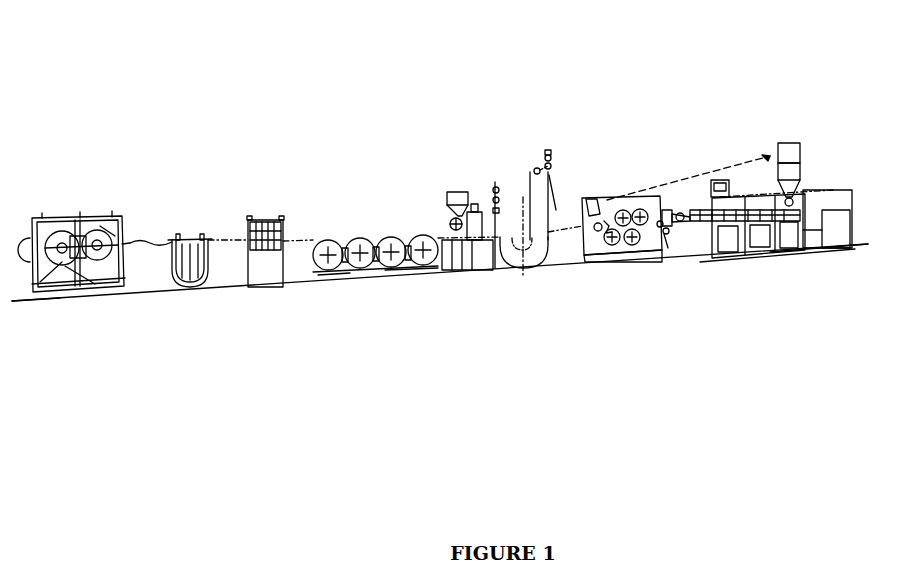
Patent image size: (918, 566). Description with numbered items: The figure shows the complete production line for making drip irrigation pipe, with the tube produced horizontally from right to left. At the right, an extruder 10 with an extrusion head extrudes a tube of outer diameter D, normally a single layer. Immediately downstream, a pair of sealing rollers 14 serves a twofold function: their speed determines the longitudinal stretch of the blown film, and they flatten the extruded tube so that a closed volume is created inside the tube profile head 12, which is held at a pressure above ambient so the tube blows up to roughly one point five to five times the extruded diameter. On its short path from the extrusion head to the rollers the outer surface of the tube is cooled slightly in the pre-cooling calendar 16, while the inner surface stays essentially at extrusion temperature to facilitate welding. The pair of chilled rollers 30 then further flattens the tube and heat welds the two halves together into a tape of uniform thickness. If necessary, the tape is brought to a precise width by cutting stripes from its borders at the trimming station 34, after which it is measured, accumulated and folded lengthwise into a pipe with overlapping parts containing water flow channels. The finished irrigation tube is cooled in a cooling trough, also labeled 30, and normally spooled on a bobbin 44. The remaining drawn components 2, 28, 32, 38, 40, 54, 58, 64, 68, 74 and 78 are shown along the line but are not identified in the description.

The floor / base 2 is at (838, 247).
The extruder 10 is at (826, 200).
The tube profile head 12 is at (676, 210).
The pair of sealing rollers 14 is at (672, 225).
The pre-cooling calendar 16 is at (667, 212).
The strand guide 28 is at (653, 224).
The pair of chilled rollers 30 is at (625, 212).
The lower rollers 32 is at (619, 210).
The trimming station 34 is at (601, 208).
The feed funnel 38 is at (597, 215).
The guide post 40 is at (547, 173).
The bobbin 44 is at (537, 175).
The powder feeder 54 is at (458, 192).
The roller set 58 is at (360, 239).
The heating unit 64 is at (268, 222).
The cooling tub 68 is at (178, 238).
The winder 74 is at (93, 217).
The base support 78 is at (79, 360).